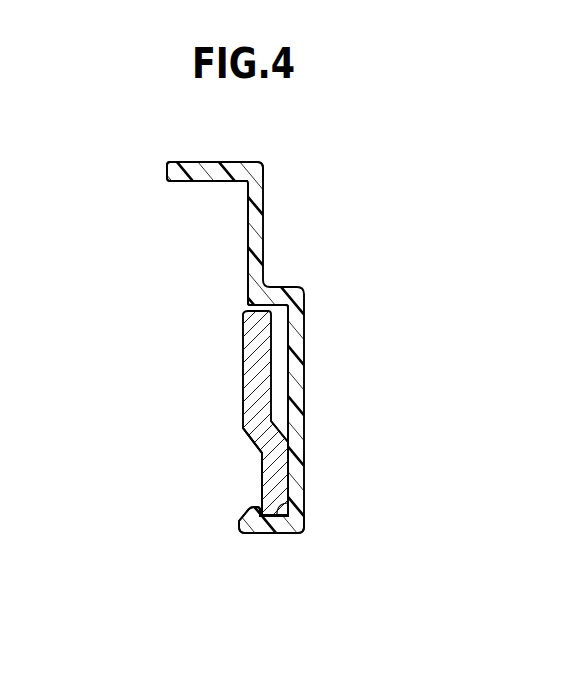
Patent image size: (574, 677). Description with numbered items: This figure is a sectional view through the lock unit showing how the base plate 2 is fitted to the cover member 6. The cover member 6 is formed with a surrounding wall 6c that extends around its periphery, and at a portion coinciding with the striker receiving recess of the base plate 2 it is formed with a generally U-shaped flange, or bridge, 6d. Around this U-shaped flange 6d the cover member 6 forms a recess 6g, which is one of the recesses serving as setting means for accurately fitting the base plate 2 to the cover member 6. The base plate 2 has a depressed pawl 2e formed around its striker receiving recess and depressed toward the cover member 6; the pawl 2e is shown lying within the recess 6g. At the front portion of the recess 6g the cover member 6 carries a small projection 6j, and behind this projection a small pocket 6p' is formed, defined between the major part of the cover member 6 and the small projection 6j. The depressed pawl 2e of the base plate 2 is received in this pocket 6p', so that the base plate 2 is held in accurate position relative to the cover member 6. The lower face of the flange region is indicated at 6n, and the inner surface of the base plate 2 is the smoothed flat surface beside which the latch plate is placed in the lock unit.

The cover member 6 is at (302, 378).
The surrounding wall 6c is at (194, 162).
The recess 6g is at (278, 367).
The base plate 2 is at (250, 405).
The depressed pawl 2e is at (265, 482).
The small projection 6j is at (253, 507).
The pocket 6p' is at (324, 502).
The U-shaped flange 6d is at (282, 528).
The bottom surface 6n is at (266, 543).